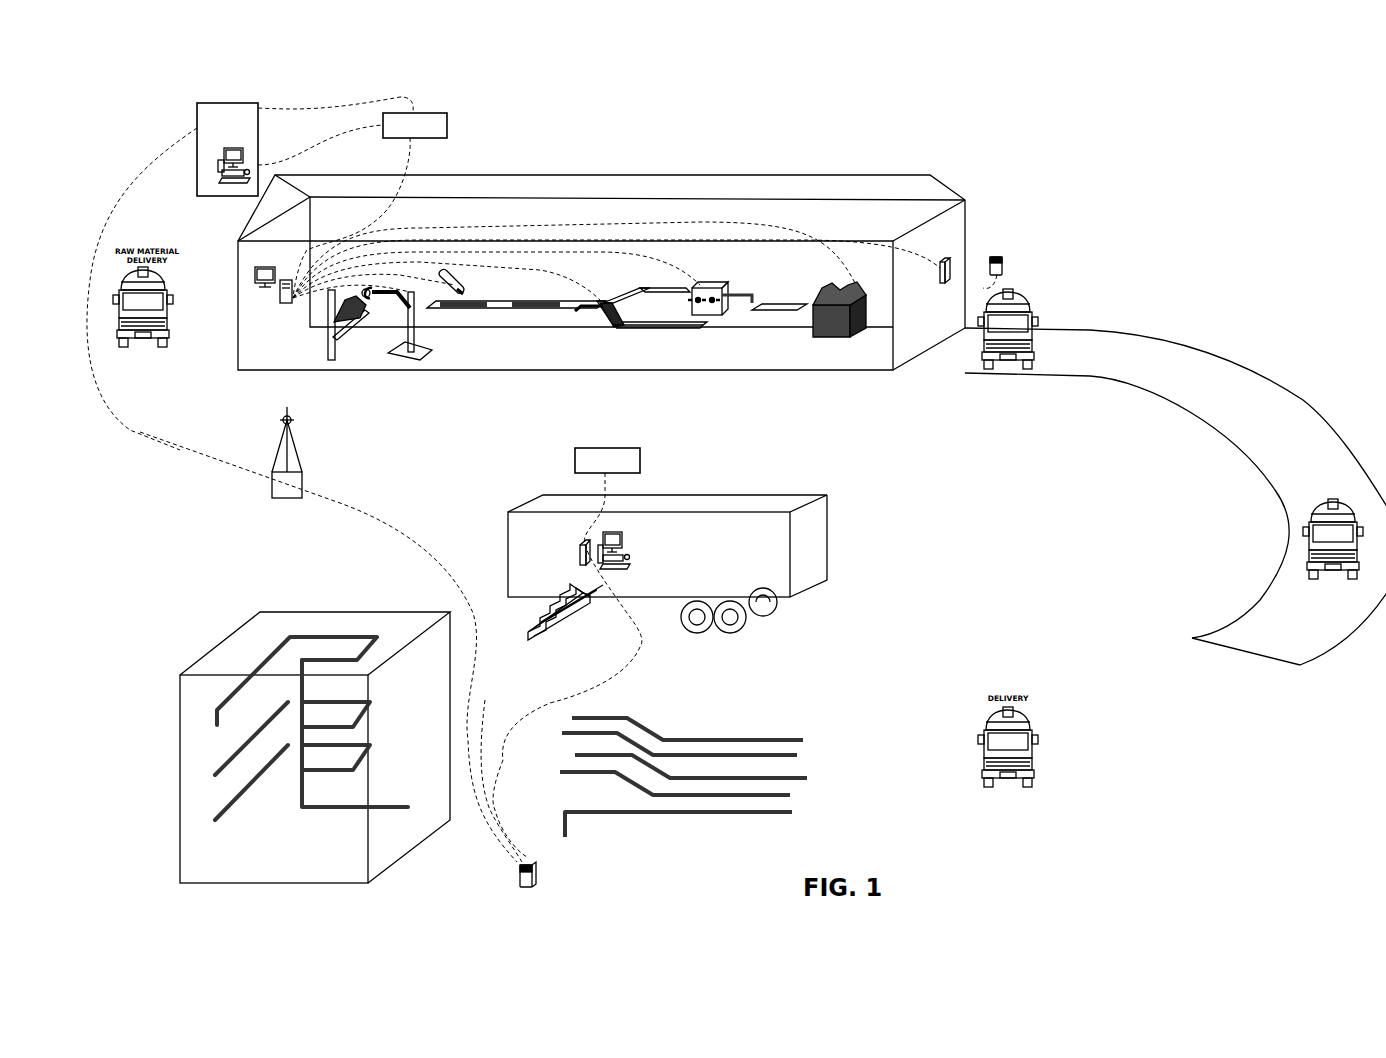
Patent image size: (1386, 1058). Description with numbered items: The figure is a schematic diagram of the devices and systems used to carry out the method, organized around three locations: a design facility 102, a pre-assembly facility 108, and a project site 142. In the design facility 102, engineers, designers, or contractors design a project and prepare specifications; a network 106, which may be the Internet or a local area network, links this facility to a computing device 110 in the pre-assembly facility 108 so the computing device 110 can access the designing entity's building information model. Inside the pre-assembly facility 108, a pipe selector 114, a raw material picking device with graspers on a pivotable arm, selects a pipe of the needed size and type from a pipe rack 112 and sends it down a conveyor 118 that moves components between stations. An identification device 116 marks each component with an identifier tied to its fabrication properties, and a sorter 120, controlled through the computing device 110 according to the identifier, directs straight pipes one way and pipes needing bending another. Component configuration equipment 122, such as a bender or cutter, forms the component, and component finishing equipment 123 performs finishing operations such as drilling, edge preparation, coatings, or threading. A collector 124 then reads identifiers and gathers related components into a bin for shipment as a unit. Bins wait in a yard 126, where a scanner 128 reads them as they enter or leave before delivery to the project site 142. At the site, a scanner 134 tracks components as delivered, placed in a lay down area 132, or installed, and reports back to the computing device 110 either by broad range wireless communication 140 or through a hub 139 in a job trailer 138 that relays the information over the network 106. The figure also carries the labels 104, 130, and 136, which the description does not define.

The design facility 102 is at (190, 120).
The BIM designer computer 104 is at (245, 158).
The network 106 is at (442, 112).
The pre-assembly facility 108 is at (635, 172).
The computing device 110 is at (252, 275).
The pipe rack 112 is at (337, 358).
The pipe selector 114 is at (403, 362).
The identification device 116 is at (447, 292).
The conveyor 118 is at (532, 319).
The sorter 120 is at (578, 286).
The component configuration equipment 122 is at (727, 278).
The component finishing equipment 123 is at (767, 320).
The collector 124 is at (848, 267).
The yard 126 is at (1080, 335).
The scanner 128 is at (1010, 270).
The delivery truck 130 is at (1293, 525).
The lay down area 132 is at (702, 730).
The scanner 134 is at (545, 873).
The construction site 136 is at (407, 603).
The job trailer 138 is at (748, 492).
The hub 139 is at (628, 547).
The wireless communication 140 is at (303, 451).
The project site 142 is at (245, 515).